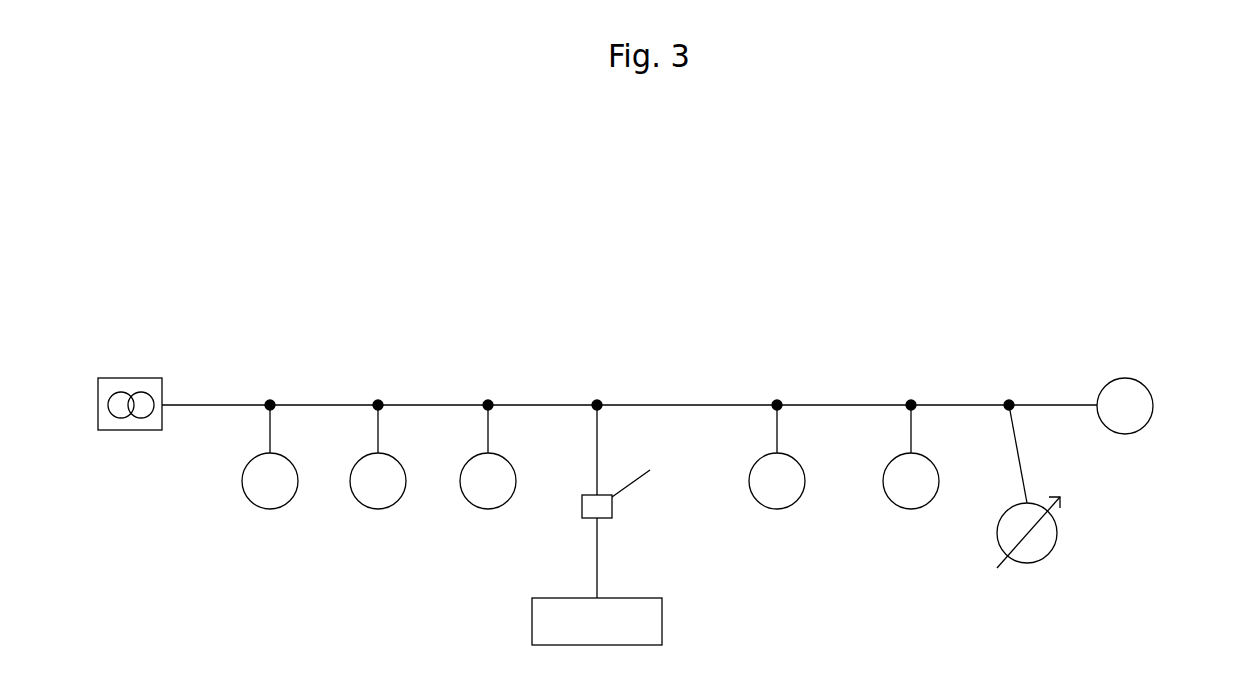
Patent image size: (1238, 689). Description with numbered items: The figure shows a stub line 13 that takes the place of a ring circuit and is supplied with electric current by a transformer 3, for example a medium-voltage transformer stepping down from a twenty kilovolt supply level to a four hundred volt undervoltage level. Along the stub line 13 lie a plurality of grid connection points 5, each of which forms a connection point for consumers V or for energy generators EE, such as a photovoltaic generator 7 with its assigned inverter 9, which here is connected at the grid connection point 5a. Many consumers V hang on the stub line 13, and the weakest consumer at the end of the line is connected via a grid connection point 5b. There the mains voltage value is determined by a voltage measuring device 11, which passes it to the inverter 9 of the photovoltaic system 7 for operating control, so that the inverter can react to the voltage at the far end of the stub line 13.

The transformer 3 is at (98, 429).
The grid connection points 5 is at (269, 402).
The grid connection point 5a is at (595, 402).
The grid connection point 5b is at (1011, 402).
The photovoltaic generator 7 is at (662, 618).
The inverter 9 is at (582, 518).
The voltage measuring device 11 is at (1050, 555).
The stub line 13 is at (629, 343).